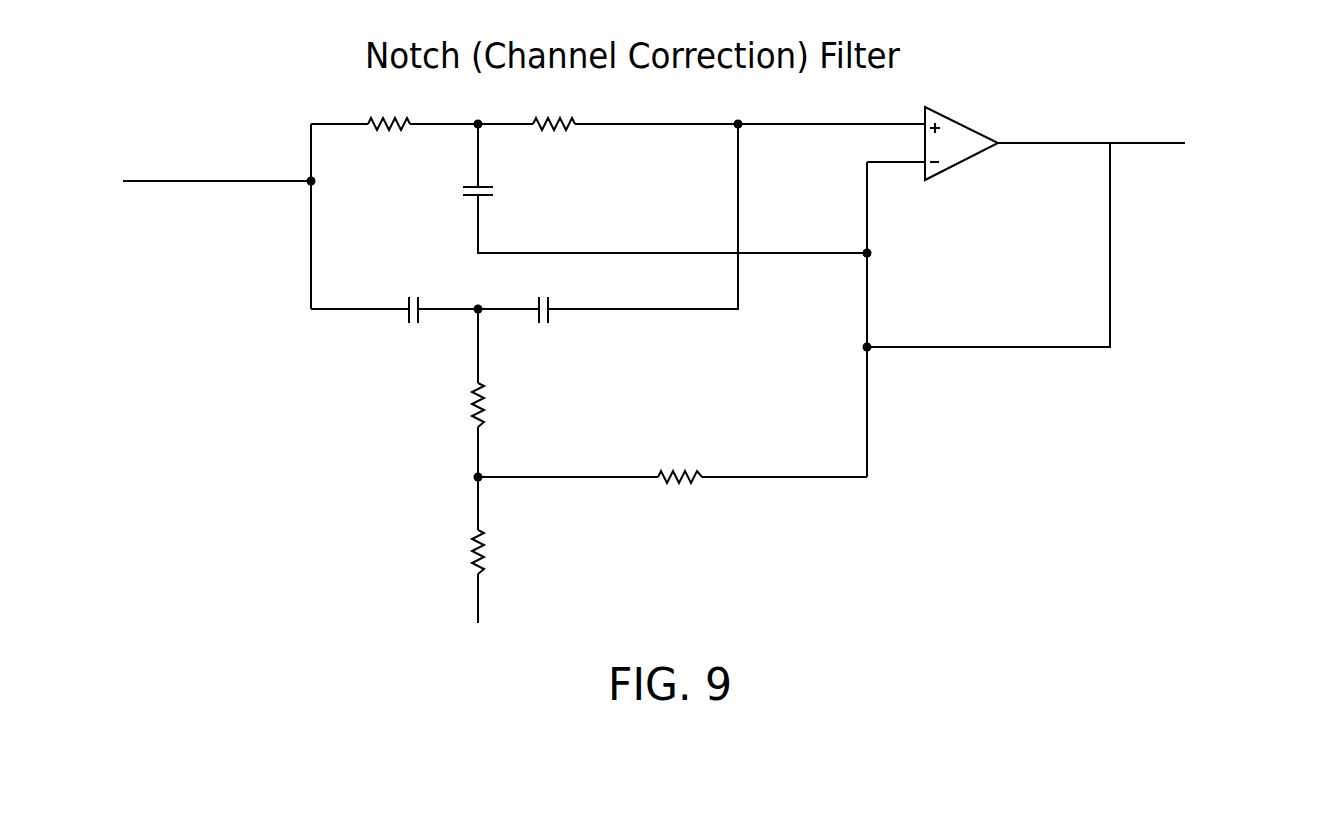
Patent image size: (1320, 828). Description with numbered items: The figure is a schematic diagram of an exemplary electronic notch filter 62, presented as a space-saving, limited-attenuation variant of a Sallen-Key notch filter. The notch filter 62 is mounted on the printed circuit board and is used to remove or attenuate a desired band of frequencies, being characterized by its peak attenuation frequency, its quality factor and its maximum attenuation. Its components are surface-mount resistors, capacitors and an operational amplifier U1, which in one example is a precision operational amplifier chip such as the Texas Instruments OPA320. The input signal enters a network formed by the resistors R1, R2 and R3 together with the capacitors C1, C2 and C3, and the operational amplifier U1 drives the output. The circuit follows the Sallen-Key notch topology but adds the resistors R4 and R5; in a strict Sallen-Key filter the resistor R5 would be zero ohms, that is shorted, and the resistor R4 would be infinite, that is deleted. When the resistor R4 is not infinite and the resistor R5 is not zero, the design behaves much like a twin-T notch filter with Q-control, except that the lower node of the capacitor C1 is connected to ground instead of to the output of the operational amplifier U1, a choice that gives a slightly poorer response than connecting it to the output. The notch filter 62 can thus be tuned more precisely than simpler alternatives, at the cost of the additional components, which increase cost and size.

The notch filter 62 is at (270, 487).
The resistor R1 is at (420, 122).
The resistor R2 is at (583, 122).
The resistor R3 is at (510, 409).
The resistor R4 is at (709, 476).
The resistor R5 is at (510, 558).
The capacitor C1 is at (496, 191).
The capacitor C2 is at (402, 297).
The capacitor C3 is at (532, 297).
The operational amplifier U1 is at (965, 142).